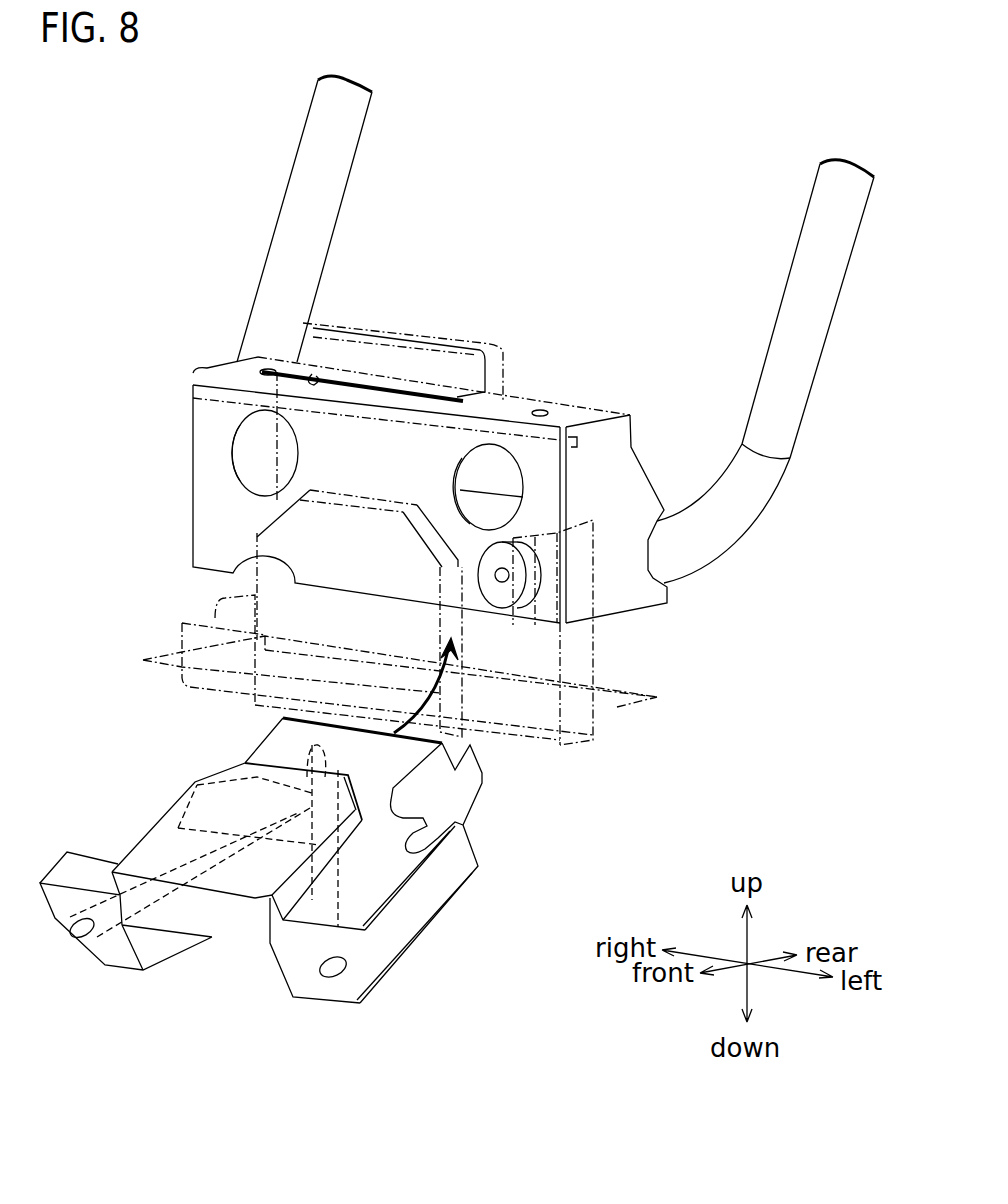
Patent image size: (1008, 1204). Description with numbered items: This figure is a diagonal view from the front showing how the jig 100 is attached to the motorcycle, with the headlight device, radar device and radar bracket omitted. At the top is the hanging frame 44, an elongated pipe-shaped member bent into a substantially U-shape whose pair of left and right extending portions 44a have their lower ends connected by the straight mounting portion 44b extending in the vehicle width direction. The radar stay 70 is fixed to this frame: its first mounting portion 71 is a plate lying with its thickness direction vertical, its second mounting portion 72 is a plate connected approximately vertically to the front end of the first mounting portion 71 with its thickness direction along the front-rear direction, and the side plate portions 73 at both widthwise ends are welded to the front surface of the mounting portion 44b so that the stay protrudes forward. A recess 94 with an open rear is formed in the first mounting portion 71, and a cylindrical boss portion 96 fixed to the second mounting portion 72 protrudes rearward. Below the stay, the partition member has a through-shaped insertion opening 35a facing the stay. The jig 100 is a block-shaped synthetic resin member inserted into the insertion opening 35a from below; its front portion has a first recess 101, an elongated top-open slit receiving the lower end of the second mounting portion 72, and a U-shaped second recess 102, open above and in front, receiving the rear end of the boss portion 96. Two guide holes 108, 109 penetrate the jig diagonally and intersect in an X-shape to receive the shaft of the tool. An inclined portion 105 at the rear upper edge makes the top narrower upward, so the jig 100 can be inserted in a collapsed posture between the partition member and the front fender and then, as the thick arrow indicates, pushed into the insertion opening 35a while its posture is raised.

The hanging frame 44 is at (557, 321).
The extending portions 44a is at (305, 175).
The mounting portion 44b is at (478, 497).
The radar stay 70 is at (435, 500).
The first mounting portion 71 is at (568, 440).
The second mounting portion 72 is at (210, 497).
The side plate portion 73 is at (618, 587).
The recess 94 is at (402, 385).
The boss portion 96 is at (597, 648).
The insertion opening 35a is at (578, 705).
The jig 100 is at (323, 885).
The first recess 101 is at (357, 850).
The second recess 102 is at (445, 817).
The inclined portion 105 is at (480, 790).
The guide hole 108 is at (148, 972).
The guide hole 109 is at (280, 970).